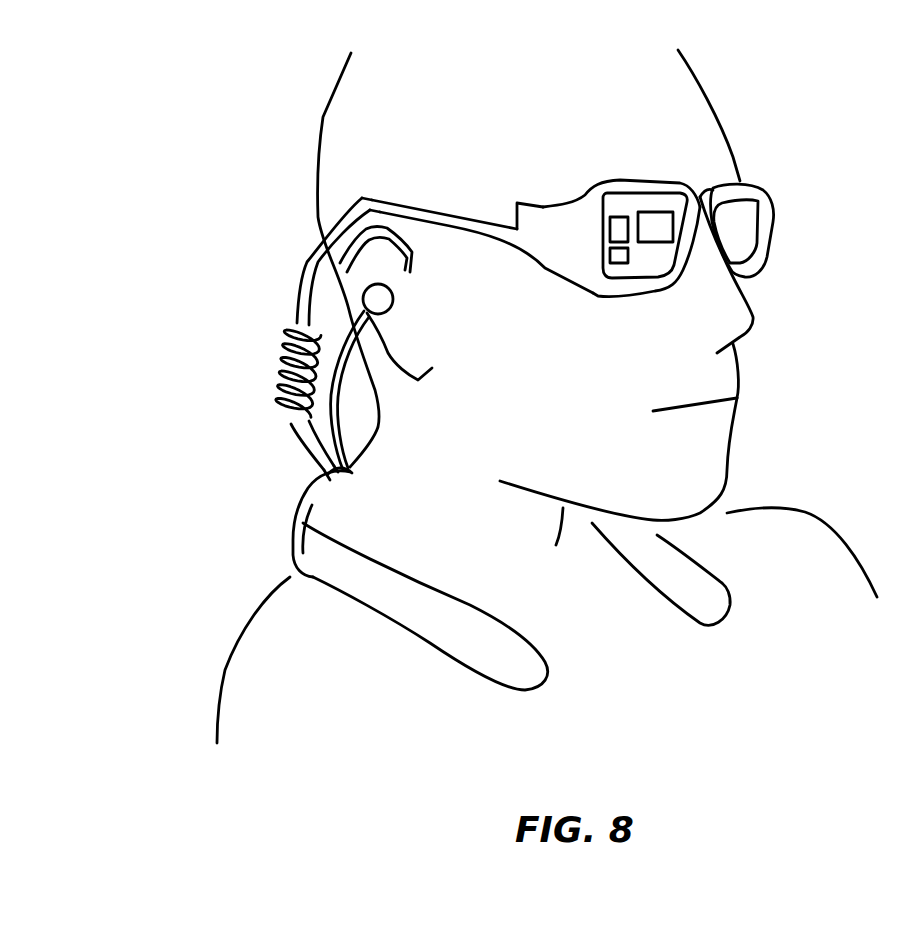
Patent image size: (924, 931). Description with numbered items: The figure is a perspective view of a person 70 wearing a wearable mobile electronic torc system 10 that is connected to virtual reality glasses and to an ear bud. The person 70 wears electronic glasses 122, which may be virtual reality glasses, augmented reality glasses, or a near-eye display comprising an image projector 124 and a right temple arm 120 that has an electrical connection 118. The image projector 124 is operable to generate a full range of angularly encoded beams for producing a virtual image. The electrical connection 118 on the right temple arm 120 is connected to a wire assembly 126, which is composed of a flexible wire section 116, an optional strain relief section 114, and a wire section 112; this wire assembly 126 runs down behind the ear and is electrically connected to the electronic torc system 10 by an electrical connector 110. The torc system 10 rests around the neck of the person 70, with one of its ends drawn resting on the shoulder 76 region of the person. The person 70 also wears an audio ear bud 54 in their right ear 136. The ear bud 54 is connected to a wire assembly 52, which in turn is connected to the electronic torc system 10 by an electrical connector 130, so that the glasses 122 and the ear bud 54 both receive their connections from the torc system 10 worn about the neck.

The electronic torc system 10 is at (307, 550).
The wire assembly 52 is at (337, 388).
The ear bud 54 is at (393, 306).
The person 70 is at (680, 98).
The user's shoulder 76 is at (262, 627).
The electrical connector 110 is at (315, 482).
The wire section 112 is at (313, 443).
The strain relief section 114 is at (280, 373).
The flexible wire section 116 is at (307, 260).
The electrical connection 118 is at (365, 197).
The right temple arm 120 is at (418, 213).
The electronic glasses 122 is at (760, 230).
The image projector 124 is at (540, 210).
The wire assembly 126 is at (210, 297).
The electrical connector 130 is at (347, 473).
The right ear 136 is at (415, 257).